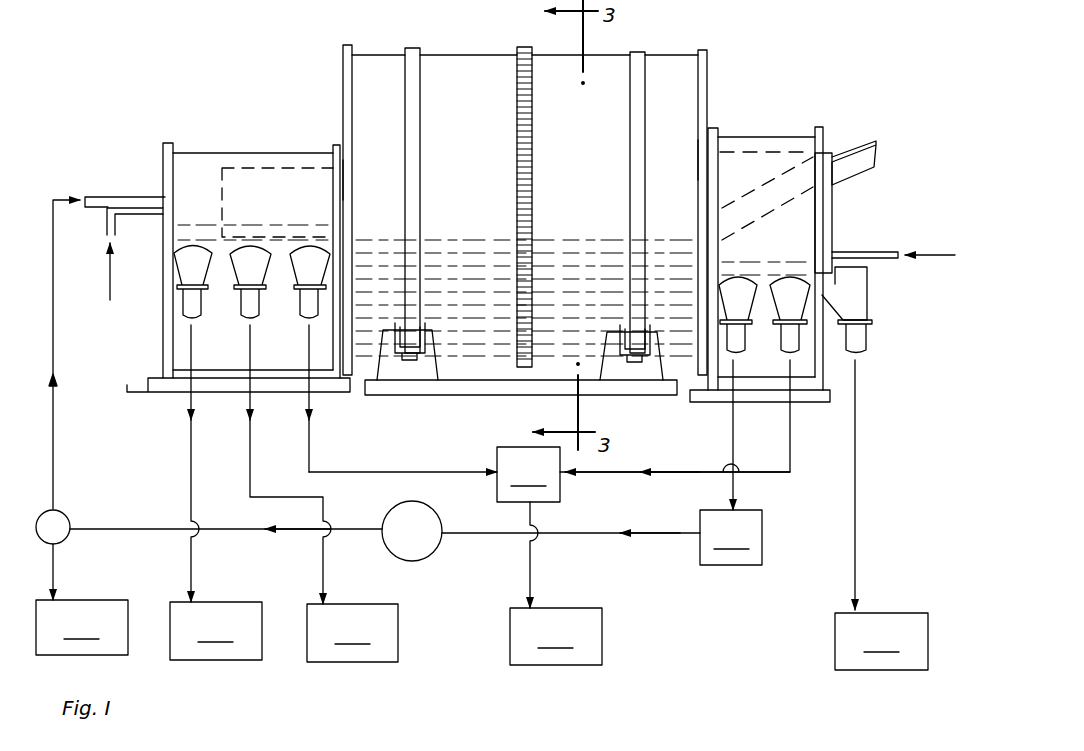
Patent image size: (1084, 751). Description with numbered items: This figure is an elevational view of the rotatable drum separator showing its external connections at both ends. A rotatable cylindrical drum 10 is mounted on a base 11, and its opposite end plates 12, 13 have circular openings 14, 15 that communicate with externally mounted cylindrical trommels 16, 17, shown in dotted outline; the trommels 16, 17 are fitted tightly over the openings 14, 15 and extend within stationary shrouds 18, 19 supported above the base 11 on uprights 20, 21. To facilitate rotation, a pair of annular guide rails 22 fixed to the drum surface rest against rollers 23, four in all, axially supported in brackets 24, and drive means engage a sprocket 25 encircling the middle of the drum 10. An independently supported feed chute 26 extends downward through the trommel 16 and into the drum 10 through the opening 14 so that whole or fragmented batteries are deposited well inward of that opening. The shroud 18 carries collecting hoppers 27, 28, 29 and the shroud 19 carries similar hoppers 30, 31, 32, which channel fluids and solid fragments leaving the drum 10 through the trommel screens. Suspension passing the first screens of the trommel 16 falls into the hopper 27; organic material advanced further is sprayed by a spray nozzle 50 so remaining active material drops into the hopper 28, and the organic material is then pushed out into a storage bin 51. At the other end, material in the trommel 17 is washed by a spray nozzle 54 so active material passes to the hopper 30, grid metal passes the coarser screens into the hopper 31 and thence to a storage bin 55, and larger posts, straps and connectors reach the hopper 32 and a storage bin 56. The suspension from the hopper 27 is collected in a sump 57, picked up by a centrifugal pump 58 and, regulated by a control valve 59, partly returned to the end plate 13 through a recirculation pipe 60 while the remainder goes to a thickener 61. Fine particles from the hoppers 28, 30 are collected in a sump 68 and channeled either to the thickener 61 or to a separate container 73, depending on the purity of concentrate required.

The rotatable cylindrical drum 10 is at (478, 55).
The base 11 is at (522, 388).
The end plate 12 is at (708, 68).
The end plate 13 is at (343, 66).
The circular opening 14 is at (697, 163).
The circular opening 15 is at (352, 180).
The cylindrical trommel 16 is at (833, 207).
The cylindrical trommel 17 is at (278, 168).
The stationary shroud 18 is at (757, 135).
The stationary shroud 19 is at (213, 153).
The uprights 20 is at (815, 158).
The uprights 21 is at (165, 150).
The annular guide rails 22 is at (412, 197).
The rollers 23 is at (418, 338).
The brackets 24 is at (386, 362).
The sprocket 25 is at (533, 157).
The feed chute 26 is at (878, 153).
The collecting hopper 27 is at (728, 298).
The collecting hopper 28 is at (788, 292).
The collecting hopper 29 is at (856, 298).
The collecting hopper 30 is at (315, 264).
The collecting hopper 31 is at (262, 262).
The collecting hopper 32 is at (195, 265).
The spray nozzle 50 is at (866, 252).
The storage bin 51 is at (881, 641).
The spray nozzle 54 is at (155, 228).
The storage bin 55 is at (324, 541).
The storage bin 56 is at (216, 540).
The sump 57 is at (602, 537).
The centrifugal pump 58 is at (432, 557).
The control valve 59 is at (67, 512).
The recirculation pipe 60 is at (125, 198).
The thickener 61 is at (82, 599).
The sump 68 is at (549, 461).
The separate container 73 is at (556, 583).